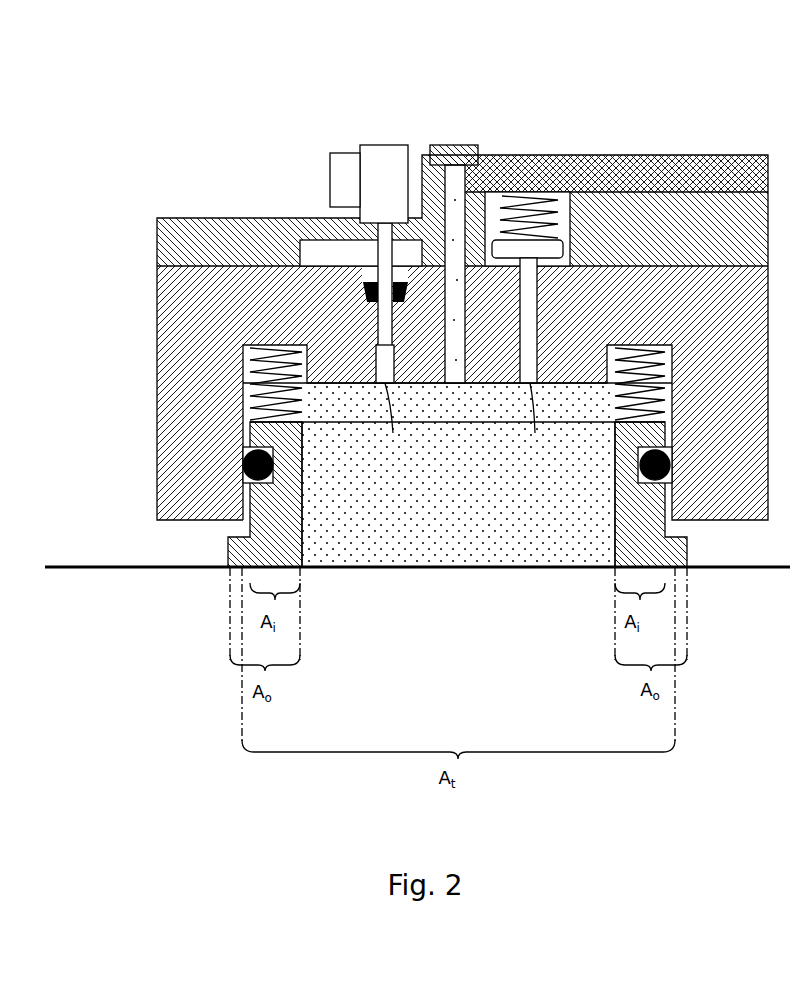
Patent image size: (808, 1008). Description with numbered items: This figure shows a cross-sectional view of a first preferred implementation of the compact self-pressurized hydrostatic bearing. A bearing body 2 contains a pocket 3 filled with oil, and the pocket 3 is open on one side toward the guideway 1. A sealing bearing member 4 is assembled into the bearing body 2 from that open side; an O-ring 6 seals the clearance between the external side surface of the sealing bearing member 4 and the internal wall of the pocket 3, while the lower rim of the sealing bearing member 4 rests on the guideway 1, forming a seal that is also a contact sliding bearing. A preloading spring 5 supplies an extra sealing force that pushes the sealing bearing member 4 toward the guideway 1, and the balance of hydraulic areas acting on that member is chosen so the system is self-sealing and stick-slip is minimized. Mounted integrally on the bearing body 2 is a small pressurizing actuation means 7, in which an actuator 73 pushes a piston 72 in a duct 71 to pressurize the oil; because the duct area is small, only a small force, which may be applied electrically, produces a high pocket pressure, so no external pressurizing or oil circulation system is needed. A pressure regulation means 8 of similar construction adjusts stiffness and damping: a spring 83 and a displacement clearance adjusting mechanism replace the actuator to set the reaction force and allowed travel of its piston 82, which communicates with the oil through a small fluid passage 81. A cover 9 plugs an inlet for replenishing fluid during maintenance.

The guideway 1 is at (135, 567).
The bearing body 2 is at (157, 325).
The pocket 3 is at (342, 458).
The sealing bearing member 4 is at (225, 548).
The preloading spring 5 is at (247, 363).
The O-ring 6 is at (250, 464).
The pressurizing actuation means 7 is at (288, 233).
The duct 71 is at (297, 278).
The piston 72 is at (322, 258).
The actuator 73 is at (325, 246).
The pressure regulation means 8 is at (595, 210).
The small fluid passage 81 is at (635, 265).
The piston 82 is at (597, 267).
The spring 83 is at (562, 218).
The cover 9 is at (455, 143).